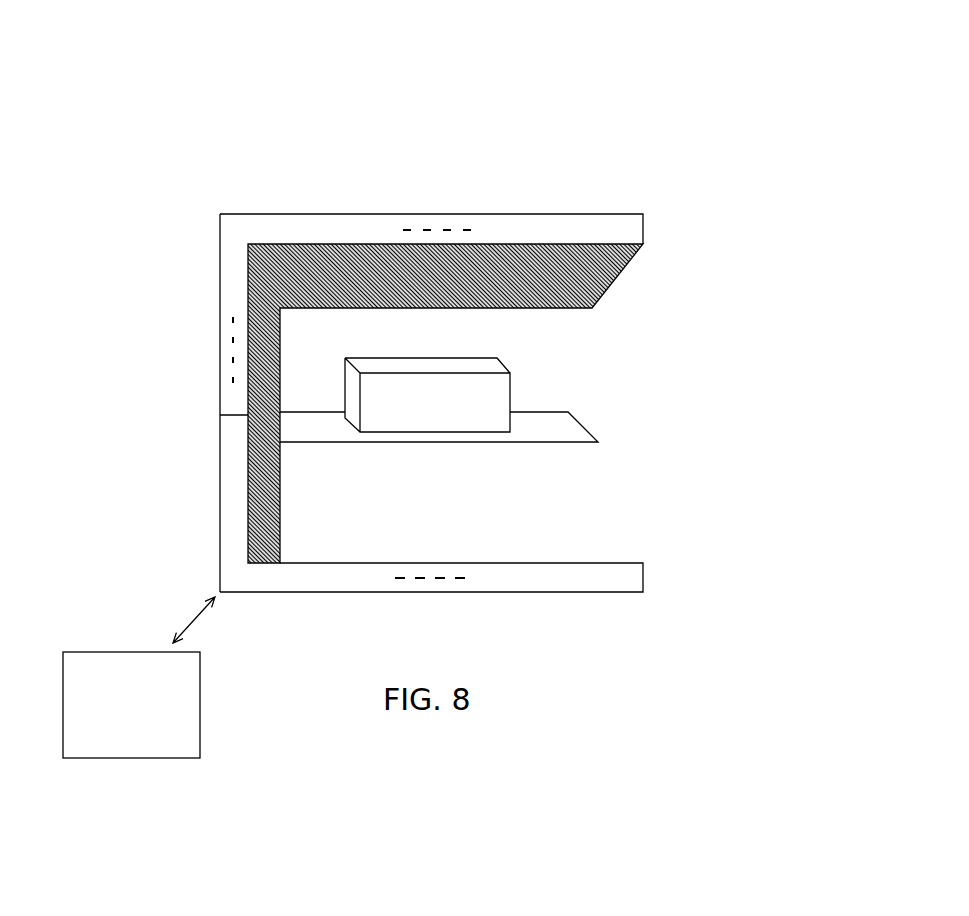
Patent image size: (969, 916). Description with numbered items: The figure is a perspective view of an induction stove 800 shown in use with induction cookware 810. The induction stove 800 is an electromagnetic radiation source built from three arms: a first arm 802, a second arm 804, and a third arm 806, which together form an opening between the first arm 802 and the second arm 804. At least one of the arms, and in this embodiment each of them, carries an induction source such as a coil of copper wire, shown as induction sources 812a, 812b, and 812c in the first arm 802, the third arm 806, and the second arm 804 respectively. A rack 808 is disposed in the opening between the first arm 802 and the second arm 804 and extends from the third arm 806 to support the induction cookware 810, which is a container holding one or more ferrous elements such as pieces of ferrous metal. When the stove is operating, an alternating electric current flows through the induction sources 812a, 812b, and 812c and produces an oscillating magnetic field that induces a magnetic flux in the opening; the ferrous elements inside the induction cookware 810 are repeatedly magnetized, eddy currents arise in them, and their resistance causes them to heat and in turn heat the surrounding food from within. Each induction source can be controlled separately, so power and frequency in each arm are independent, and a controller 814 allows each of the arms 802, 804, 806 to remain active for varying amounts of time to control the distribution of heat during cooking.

The induction stove 800 is at (455, 165).
The first arm 802 is at (573, 214).
The second arm 804 is at (560, 592).
The third arm 806 is at (220, 357).
The rack 808 is at (546, 425).
The induction cookware 810 is at (510, 400).
The induction source 812a is at (448, 214).
The induction source 812b is at (220, 375).
The induction source 812c is at (440, 585).
The controller 814 is at (110, 763).